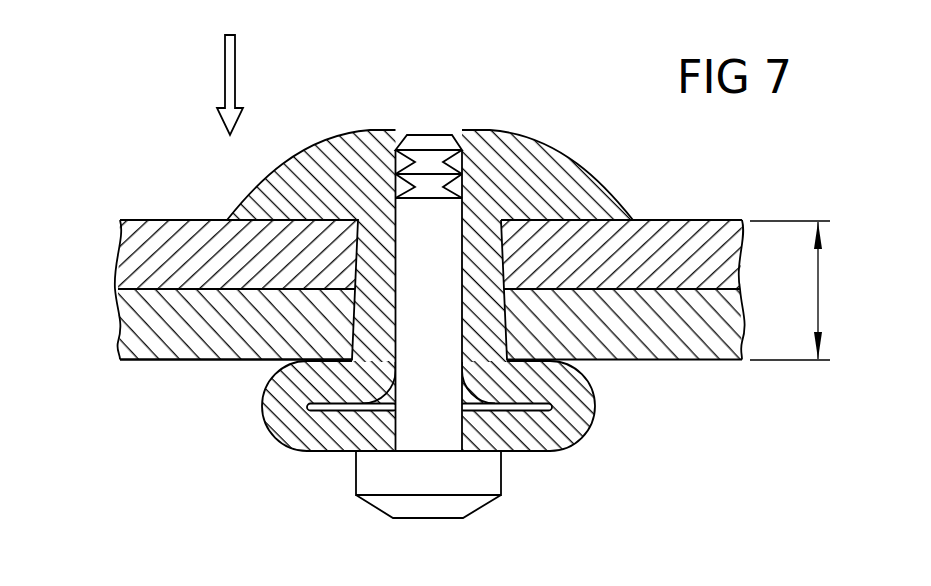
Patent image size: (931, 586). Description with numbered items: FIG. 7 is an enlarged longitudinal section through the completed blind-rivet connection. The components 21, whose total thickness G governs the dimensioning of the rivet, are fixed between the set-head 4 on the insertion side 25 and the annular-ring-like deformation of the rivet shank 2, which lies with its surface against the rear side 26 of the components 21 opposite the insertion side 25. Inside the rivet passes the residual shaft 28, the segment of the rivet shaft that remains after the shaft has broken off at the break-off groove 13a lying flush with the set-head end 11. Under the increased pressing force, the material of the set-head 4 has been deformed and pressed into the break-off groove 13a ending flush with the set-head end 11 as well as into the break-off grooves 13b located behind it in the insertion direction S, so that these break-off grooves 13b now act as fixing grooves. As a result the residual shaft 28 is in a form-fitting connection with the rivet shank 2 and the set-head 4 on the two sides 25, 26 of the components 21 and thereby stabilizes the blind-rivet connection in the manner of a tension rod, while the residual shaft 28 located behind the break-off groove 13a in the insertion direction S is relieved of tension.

The rivet shank 2 is at (582, 440).
The set-head 4 is at (308, 150).
The set-head end 11 is at (471, 118).
The break-off groove 13a is at (425, 134).
The break-off grooves 13b is at (462, 160).
The components 21 is at (131, 316).
The insertion side 25 is at (166, 208).
The rear side 26 is at (171, 373).
The residual shaft 28 is at (444, 393).
The insertion direction S is at (230, 66).
The total thickness G is at (819, 289).